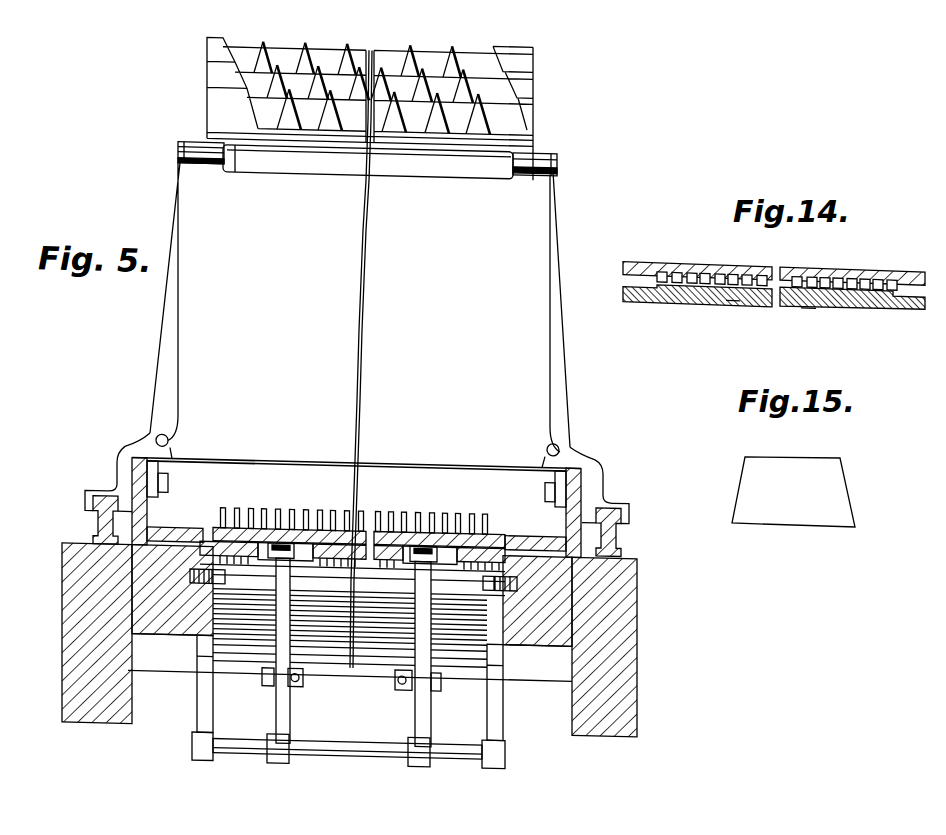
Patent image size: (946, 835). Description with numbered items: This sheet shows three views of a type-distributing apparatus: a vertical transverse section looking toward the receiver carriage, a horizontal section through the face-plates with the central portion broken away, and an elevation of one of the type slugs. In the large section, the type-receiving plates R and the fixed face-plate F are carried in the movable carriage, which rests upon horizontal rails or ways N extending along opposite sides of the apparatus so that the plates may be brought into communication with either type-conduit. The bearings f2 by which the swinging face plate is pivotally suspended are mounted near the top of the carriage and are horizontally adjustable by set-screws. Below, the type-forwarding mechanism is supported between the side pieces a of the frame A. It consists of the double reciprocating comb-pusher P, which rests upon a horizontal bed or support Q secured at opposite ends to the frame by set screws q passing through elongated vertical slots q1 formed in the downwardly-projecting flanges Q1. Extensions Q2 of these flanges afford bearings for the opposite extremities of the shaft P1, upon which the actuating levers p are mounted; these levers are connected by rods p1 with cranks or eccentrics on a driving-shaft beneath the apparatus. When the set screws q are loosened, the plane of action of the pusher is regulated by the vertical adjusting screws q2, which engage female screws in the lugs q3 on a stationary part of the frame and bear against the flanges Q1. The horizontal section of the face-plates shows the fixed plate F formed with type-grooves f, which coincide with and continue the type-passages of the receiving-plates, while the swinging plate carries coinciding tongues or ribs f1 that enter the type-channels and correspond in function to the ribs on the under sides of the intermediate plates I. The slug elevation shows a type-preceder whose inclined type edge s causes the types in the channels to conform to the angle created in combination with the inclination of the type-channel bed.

In FIG. 5, the type-receiving plates R is at (370, 108).
In FIG. 5, the bearings f2 is at (367, 152).
In FIG. 5, the fixed face-plate F is at (360, 359).
In FIG. 14, the fixed face-plate F is at (745, 275).
In FIG. 5, the horizontal rails or ways N is at (90, 527).
In FIG. 5, the frame A is at (346, 639).
In FIG. 5, the side pieces a is at (352, 596).
In FIG. 5, the horizontal bed or support Q is at (206, 545).
In FIG. 5, the double reciprocating comb-pusher P is at (380, 531).
In FIG. 5, the set screws q is at (225, 580).
In FIG. 5, the elongated vertical slots q1 is at (240, 588).
In FIG. 5, the lugs q3 is at (220, 633).
In FIG. 5, the downwardly-projecting flanges Q1 is at (168, 640).
In FIG. 5, the extensions Q2 is at (349, 652).
In FIG. 5, the vertical adjusting screws q2 is at (197, 660).
In FIG. 5, the levers p is at (296, 689).
In FIG. 5, the rods p1 is at (304, 683).
In FIG. 5, the shaft P1 is at (348, 747).
In FIG. 14, the type-grooves f is at (698, 292).
In FIG. 14, the tongues or ribs f1 is at (667, 299).
In FIG. 14, the intermediate plates I is at (771, 308).
In FIG. 15, the inclined type edges s is at (793, 492).